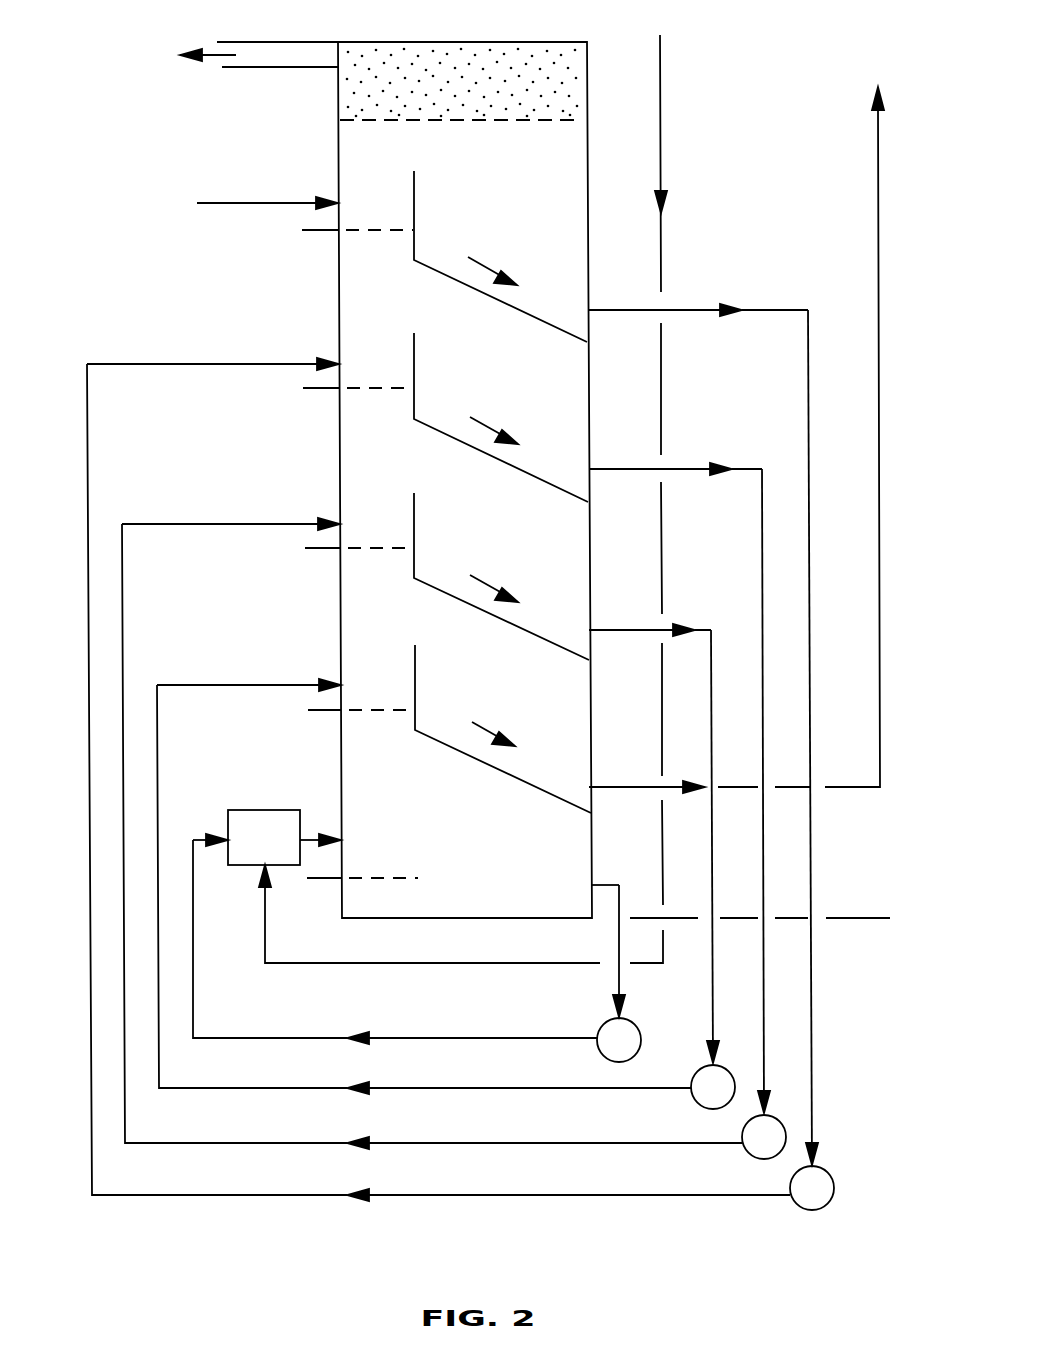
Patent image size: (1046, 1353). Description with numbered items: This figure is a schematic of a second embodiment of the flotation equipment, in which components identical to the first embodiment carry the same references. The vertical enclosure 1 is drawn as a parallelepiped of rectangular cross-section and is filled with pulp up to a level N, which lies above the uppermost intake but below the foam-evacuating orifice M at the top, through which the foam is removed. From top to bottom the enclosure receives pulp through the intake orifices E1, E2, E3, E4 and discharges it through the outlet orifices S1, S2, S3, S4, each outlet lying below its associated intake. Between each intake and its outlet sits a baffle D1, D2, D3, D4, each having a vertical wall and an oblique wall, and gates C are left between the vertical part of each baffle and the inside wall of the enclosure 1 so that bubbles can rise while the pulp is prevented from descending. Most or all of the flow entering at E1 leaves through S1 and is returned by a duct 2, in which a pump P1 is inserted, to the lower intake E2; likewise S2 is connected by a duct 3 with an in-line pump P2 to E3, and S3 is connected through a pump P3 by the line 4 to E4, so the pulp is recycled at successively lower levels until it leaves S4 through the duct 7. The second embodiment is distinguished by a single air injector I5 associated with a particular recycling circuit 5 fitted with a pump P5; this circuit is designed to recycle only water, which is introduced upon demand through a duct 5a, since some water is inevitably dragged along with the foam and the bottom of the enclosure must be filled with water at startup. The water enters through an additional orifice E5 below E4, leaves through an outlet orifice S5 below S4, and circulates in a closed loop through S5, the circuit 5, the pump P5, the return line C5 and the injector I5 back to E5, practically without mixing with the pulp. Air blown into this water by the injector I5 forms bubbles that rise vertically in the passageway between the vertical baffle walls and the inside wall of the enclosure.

The enclosure 1 is at (589, 117).
The foam-evacuating orifice M is at (310, 57).
The level N is at (538, 120).
The duct 7 is at (736, 440).
The duct 2 is at (468, 735).
The duct 3 is at (460, 790).
The stream from S3 to E4 4 is at (454, 845).
The recycling circuit 5 is at (598, 928).
The duct 5a is at (842, 918).
The gates C is at (375, 435).
The intake orifice E1 is at (305, 231).
The intake orifice E2 is at (250, 390).
The intake orifice E3 is at (267, 550).
The intake orifice E4 is at (285, 711).
The additional orifice E5 is at (351, 895).
The baffle D1 is at (497, 300).
The baffle D2 is at (497, 461).
The baffle D3 is at (497, 620).
The baffle D4 is at (497, 768).
The outlet orifice S1 is at (698, 288).
The outlet orifice S2 is at (675, 448).
The outlet orifice S3 is at (650, 608).
The outlet orifice S4 is at (647, 766).
The outlet orifice S5 is at (613, 862).
The air injector I5 is at (267, 837).
The pump P1 is at (815, 1188).
The pump P2 is at (768, 1135).
The pump P3 is at (718, 1083).
The pump P5 is at (627, 1035).
The recycle stream to I5 C5 is at (231, 1037).